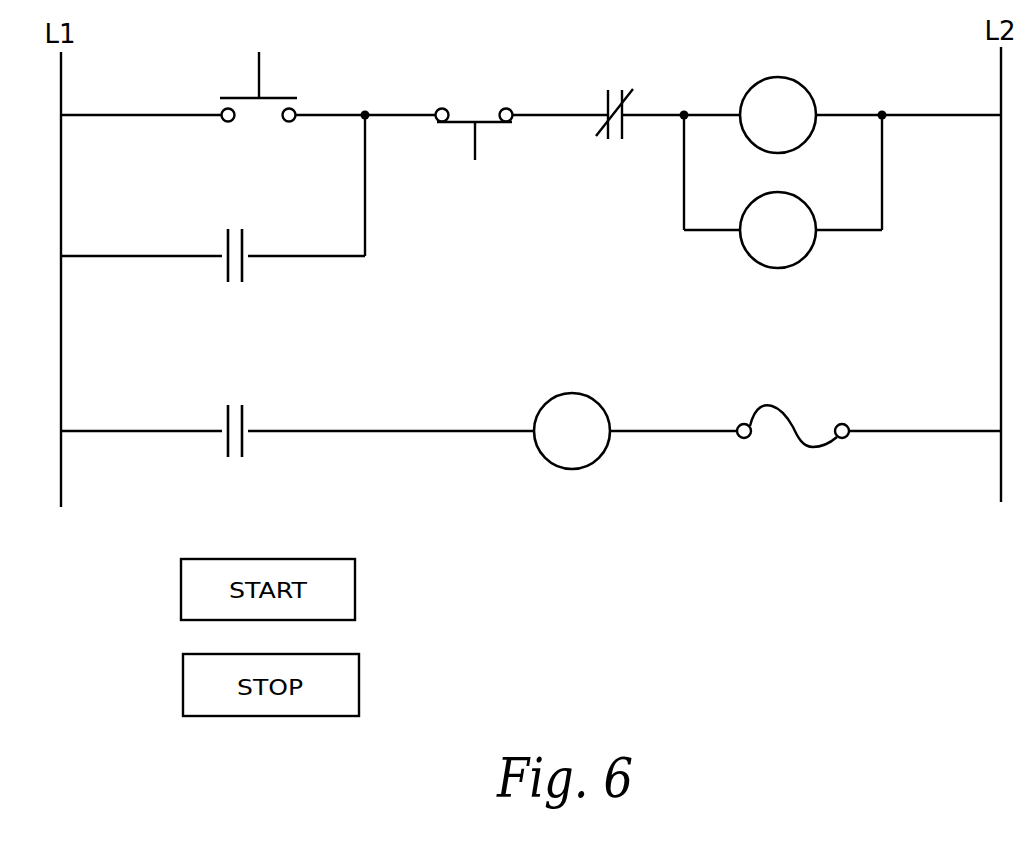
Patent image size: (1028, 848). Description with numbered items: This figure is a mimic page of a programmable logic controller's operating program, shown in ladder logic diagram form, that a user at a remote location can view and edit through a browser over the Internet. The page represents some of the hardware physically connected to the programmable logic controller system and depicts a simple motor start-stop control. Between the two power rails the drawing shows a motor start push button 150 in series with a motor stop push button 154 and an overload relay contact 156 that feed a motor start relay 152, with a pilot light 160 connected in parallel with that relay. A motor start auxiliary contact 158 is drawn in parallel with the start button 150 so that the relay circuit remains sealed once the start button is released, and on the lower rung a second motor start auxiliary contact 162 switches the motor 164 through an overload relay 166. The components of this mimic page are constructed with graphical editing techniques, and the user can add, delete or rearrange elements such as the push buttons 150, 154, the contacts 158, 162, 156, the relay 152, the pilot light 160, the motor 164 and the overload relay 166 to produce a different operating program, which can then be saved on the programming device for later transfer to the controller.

The motor start push button 150 is at (325, 68).
The motor start relay K1 152 is at (822, 95).
The motor stop push button 154 is at (493, 148).
The overload relay contact OLR1 156 is at (615, 153).
The motor start auxiliary contact 1 158 is at (248, 268).
The pilot light L1 160 is at (823, 248).
The motor start auxiliary contact 2 162 is at (263, 445).
The motor M 164 is at (588, 462).
The overload relay 166 is at (805, 447).